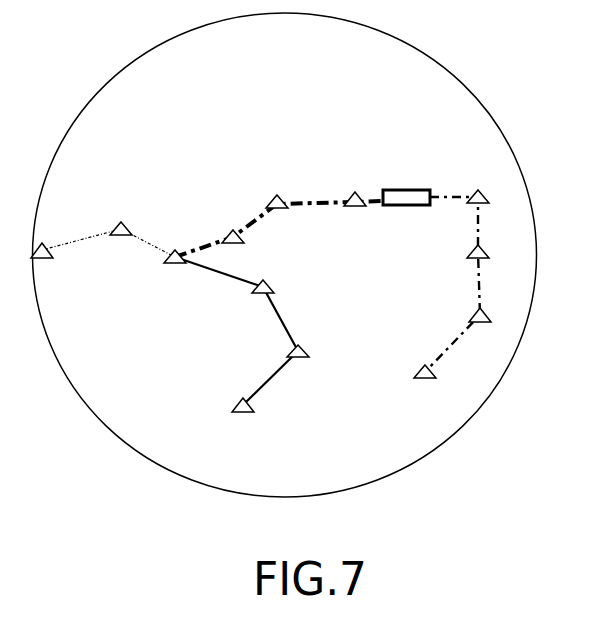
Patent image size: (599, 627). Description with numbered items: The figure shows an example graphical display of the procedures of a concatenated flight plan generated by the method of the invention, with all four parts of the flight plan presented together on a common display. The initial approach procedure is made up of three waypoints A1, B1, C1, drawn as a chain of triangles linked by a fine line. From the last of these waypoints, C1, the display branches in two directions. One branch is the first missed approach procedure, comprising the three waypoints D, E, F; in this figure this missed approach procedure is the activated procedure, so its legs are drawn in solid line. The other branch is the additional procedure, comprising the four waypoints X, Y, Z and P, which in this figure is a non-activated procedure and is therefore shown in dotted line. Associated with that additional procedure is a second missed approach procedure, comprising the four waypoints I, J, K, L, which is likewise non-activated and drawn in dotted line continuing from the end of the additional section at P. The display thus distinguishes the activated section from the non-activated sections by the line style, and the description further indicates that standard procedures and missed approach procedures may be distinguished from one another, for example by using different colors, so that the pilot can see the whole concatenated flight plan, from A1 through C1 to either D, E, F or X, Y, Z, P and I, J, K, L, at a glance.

The waypoint A1 is at (54, 268).
The waypoint B1 is at (124, 213).
The waypoint C1 is at (176, 274).
The waypoint X is at (225, 225).
The waypoint Y is at (268, 192).
The waypoint Z is at (347, 190).
The waypoint P is at (406, 214).
The waypoint I is at (488, 208).
The waypoint J is at (487, 261).
The waypoint K is at (491, 325).
The waypoint L is at (438, 382).
The waypoint D is at (279, 296).
The waypoint E is at (312, 362).
The waypoint F is at (256, 415).